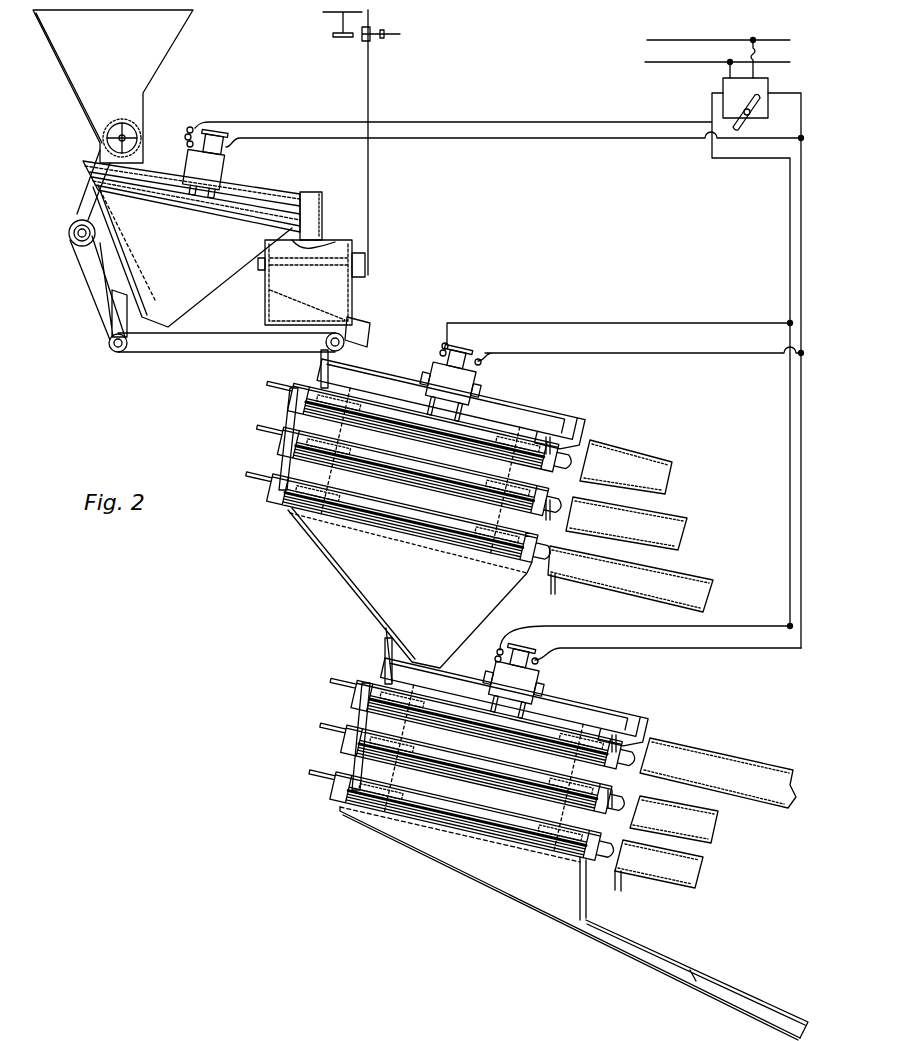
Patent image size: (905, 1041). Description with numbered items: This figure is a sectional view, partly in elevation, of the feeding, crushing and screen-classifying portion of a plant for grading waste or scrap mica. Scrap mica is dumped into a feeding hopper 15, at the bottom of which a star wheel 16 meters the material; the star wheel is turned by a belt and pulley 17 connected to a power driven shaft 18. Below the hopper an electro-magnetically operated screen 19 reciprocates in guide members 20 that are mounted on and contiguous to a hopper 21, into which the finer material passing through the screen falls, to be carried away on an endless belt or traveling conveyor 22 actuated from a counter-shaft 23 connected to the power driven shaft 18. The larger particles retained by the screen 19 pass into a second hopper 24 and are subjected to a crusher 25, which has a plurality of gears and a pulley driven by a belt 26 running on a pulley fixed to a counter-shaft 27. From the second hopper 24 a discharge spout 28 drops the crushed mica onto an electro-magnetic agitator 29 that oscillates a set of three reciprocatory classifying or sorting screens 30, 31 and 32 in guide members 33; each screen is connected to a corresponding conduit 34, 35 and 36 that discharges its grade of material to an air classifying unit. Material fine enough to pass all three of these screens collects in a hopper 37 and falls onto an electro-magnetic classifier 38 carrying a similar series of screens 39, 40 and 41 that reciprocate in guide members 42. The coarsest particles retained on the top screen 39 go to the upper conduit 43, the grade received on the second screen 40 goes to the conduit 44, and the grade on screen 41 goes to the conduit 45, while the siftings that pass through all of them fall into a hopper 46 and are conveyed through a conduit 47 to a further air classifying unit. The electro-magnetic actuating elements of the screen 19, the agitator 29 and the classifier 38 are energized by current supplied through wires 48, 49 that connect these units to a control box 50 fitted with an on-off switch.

The feeding hopper 15 is at (113, 86).
The star wheel 16 is at (122, 124).
The belt and pulley 17 is at (70, 226).
The power driven shaft 18 is at (70, 241).
The electro-magnetically operated screen 19 is at (213, 171).
The guide members 20 is at (260, 192).
The hopper 21 is at (192, 288).
The endless belt or traveling conveyor 22 is at (165, 356).
The counter-shaft 23 is at (105, 353).
The second hopper 24 is at (330, 218).
The crusher 25 is at (326, 273).
The belt 26 is at (370, 230).
The counter-shaft 27 is at (384, 41).
The discharge spout 28 is at (368, 336).
The electro-magnetic agitator 29 is at (470, 395).
The classifying screen 30 is at (505, 434).
The classifying screen 31 is at (325, 440).
The classifying screen 32 is at (434, 533).
The guide members 33 is at (540, 436).
The conduit 34 is at (626, 467).
The conduit 35 is at (626, 523).
The conduit 36 is at (630, 579).
The hopper 37 is at (357, 605).
The electro-magnetic classifier 38 is at (527, 690).
The screen 39 is at (566, 730).
The screen 40 is at (365, 736).
The screen 41 is at (505, 831).
The guide members 42 is at (614, 735).
The upper conduit 43 is at (718, 773).
The conduit 44 is at (674, 819).
The conduit 45 is at (659, 864).
The hopper 46 is at (516, 895).
The conduit 47 is at (740, 1003).
The wire 48 is at (593, 122).
The wire 49 is at (603, 139).
The control box 50 is at (723, 100).